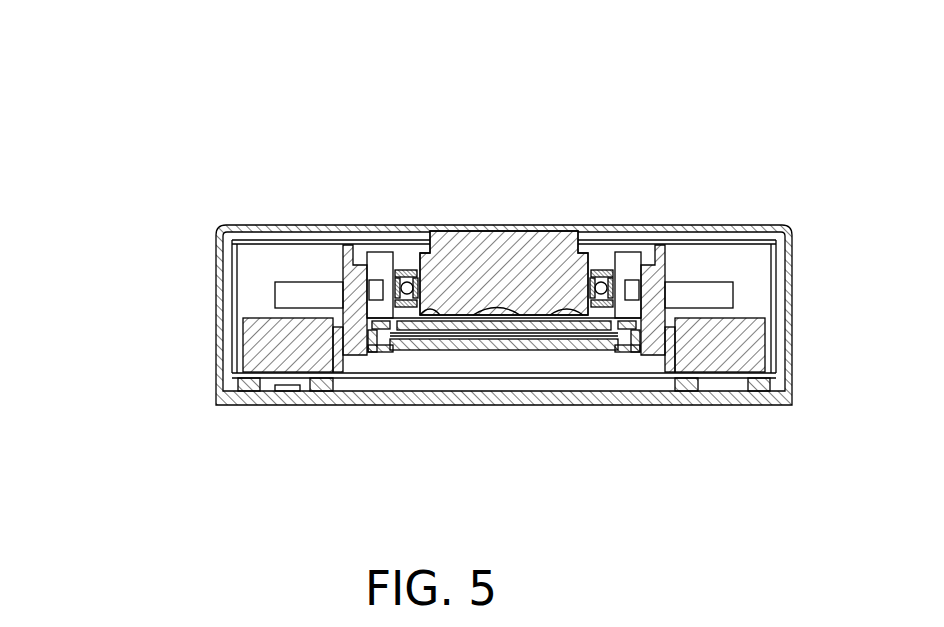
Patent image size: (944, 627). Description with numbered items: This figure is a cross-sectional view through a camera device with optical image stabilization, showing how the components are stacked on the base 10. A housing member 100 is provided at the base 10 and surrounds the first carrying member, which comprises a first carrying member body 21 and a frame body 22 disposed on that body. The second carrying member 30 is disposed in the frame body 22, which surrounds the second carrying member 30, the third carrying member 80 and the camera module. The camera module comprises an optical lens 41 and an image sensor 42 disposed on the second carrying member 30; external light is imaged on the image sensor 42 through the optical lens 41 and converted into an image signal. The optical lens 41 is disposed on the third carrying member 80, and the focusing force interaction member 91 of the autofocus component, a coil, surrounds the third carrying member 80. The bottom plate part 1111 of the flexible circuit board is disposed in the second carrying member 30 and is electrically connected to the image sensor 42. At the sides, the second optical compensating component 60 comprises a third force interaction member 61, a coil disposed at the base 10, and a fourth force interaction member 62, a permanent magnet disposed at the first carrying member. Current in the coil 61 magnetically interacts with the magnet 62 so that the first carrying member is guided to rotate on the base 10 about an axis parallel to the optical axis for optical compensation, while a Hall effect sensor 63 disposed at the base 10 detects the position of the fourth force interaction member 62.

The housing member 100 is at (423, 309).
The base 10 is at (708, 396).
The first carrying member body 21 is at (637, 373).
The frame body 22 is at (355, 253).
The second carrying member 30 is at (377, 325).
The optical lens 41 is at (520, 250).
The image sensor 42 is at (553, 322).
The second optical compensating component 60 is at (412, 404).
The third force interaction member 61 is at (250, 382).
The fourth force interaction member 62 is at (268, 347).
The Hall effect sensor 63 is at (288, 388).
The third carrying member 80 is at (410, 278).
The focusing force interaction member 91 is at (393, 282).
The bottom plate part 1111 is at (428, 333).